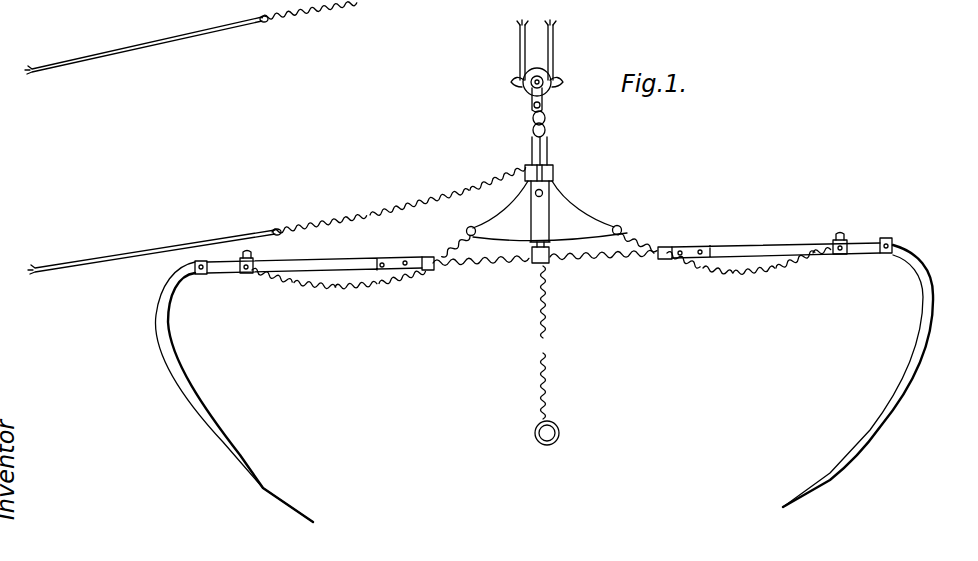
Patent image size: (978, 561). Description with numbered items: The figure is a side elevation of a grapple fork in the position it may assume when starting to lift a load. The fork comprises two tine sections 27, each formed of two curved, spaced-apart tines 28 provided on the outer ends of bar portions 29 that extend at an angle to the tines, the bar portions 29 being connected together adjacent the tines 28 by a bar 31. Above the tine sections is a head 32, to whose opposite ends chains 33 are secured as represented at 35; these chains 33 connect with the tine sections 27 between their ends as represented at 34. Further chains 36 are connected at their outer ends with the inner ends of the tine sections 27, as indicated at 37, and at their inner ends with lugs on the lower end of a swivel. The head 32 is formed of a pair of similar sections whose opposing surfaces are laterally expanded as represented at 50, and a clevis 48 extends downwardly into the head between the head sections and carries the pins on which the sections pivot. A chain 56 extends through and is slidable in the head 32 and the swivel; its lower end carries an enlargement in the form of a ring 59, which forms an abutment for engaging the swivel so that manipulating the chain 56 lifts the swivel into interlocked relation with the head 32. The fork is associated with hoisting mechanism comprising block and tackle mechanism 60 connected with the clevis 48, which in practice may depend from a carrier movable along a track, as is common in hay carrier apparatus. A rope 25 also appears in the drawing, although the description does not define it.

The draft rope 25 is at (146, 37).
The tine section 27 is at (229, 281).
The tine 28 is at (198, 410).
The bar portion 29 is at (328, 264).
The bar 31 is at (887, 239).
The head 32 is at (579, 197).
The chain 33 is at (456, 244).
The connection of chain to tine section 34 is at (248, 256).
The securement of chain to head 35 is at (472, 226).
The chain 36 is at (483, 266).
The connection of chain to tine section 37 is at (425, 258).
The clevis 48 is at (551, 169).
The laterally expanded surfaces 50 is at (531, 223).
The chain 56 is at (384, 0).
The ring 59 is at (548, 446).
The block and tackle mechanism 60 is at (519, 101).